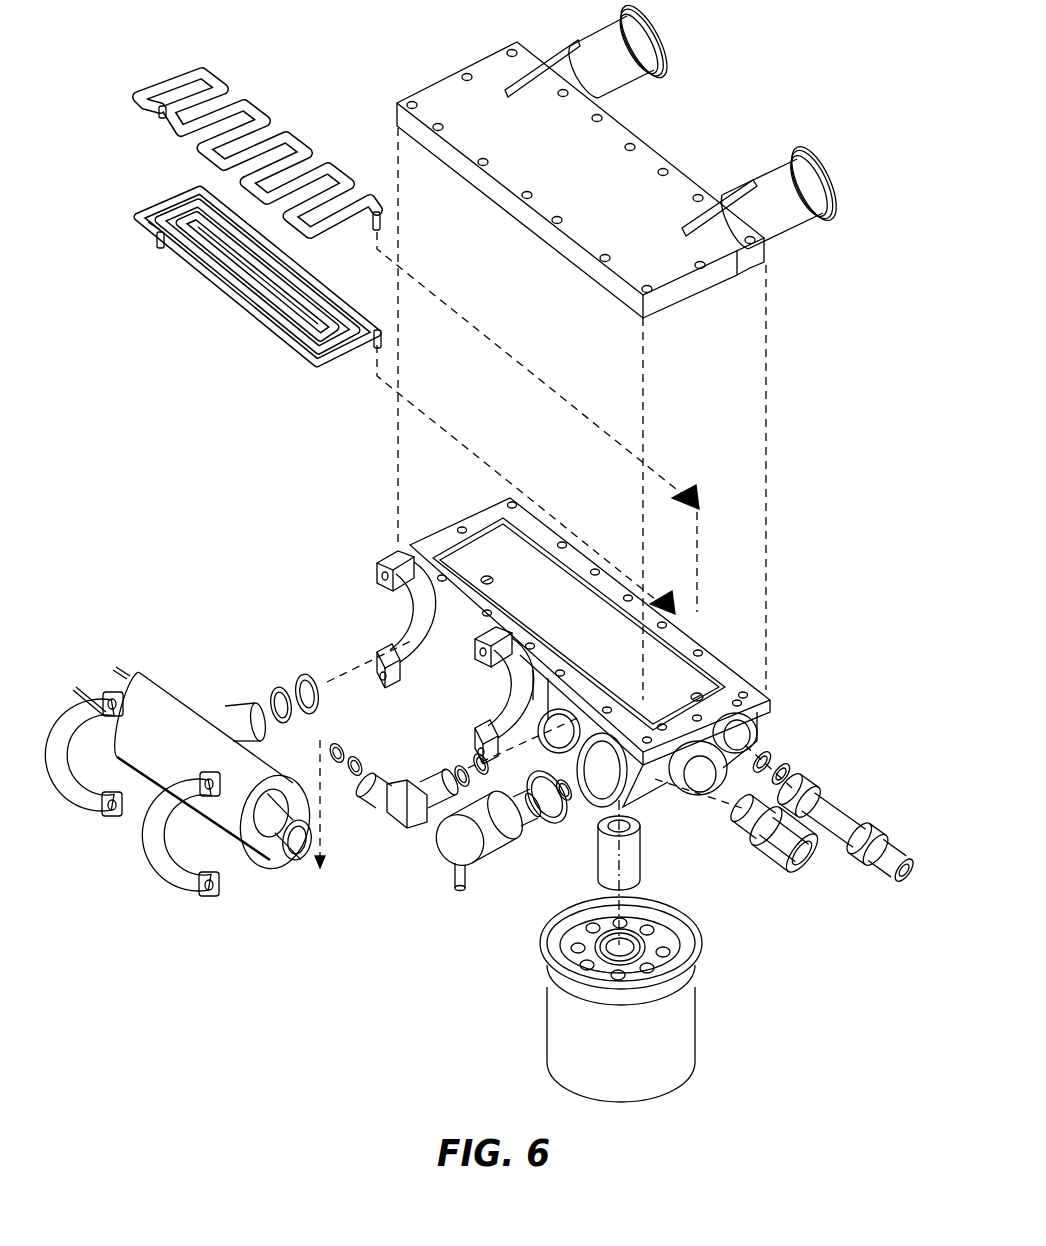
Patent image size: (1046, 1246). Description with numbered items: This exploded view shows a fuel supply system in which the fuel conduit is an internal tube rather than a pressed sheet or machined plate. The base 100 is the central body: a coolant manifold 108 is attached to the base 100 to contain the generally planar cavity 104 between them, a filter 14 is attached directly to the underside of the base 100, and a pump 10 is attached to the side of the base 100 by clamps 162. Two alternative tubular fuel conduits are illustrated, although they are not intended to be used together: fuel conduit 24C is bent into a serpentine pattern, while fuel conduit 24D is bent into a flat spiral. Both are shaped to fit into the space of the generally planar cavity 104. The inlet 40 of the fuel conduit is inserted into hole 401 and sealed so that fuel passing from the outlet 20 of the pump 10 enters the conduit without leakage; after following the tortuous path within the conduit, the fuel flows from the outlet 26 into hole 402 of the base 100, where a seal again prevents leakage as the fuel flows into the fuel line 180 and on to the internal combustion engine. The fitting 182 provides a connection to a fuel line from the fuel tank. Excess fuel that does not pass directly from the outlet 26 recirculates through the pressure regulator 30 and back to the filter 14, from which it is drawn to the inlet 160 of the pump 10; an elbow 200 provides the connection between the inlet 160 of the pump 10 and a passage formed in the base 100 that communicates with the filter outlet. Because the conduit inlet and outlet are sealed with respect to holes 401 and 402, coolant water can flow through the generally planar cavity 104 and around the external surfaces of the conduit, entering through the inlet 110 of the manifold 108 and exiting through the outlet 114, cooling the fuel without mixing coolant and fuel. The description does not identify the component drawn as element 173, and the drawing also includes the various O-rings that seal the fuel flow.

The pump 10 is at (178, 703).
The filter 14 is at (547, 1032).
The outlet of the pump 20 is at (234, 712).
The fuel conduit 24C is at (205, 148).
The fuel conduit 24D is at (300, 270).
The outlet of the fuel conduit 26 is at (376, 212).
The pressure regulator 30 is at (450, 852).
The inlet of the fuel conduit 40 is at (158, 114).
The base 100 is at (723, 670).
The generally planar cavity 104 is at (482, 545).
The coolant manifold 108 is at (472, 147).
The inlet of the manifold 110 is at (808, 212).
The outlet of the manifold 114 is at (632, 76).
The inlet of the pump 160 is at (283, 842).
The clamps 162 is at (74, 772).
The plug fitting 173 is at (637, 848).
The fuel line 180 is at (840, 810).
The fitting 182 is at (776, 862).
The elbow 200 is at (395, 810).
The hole 401 is at (489, 576).
The hole 402 is at (693, 694).